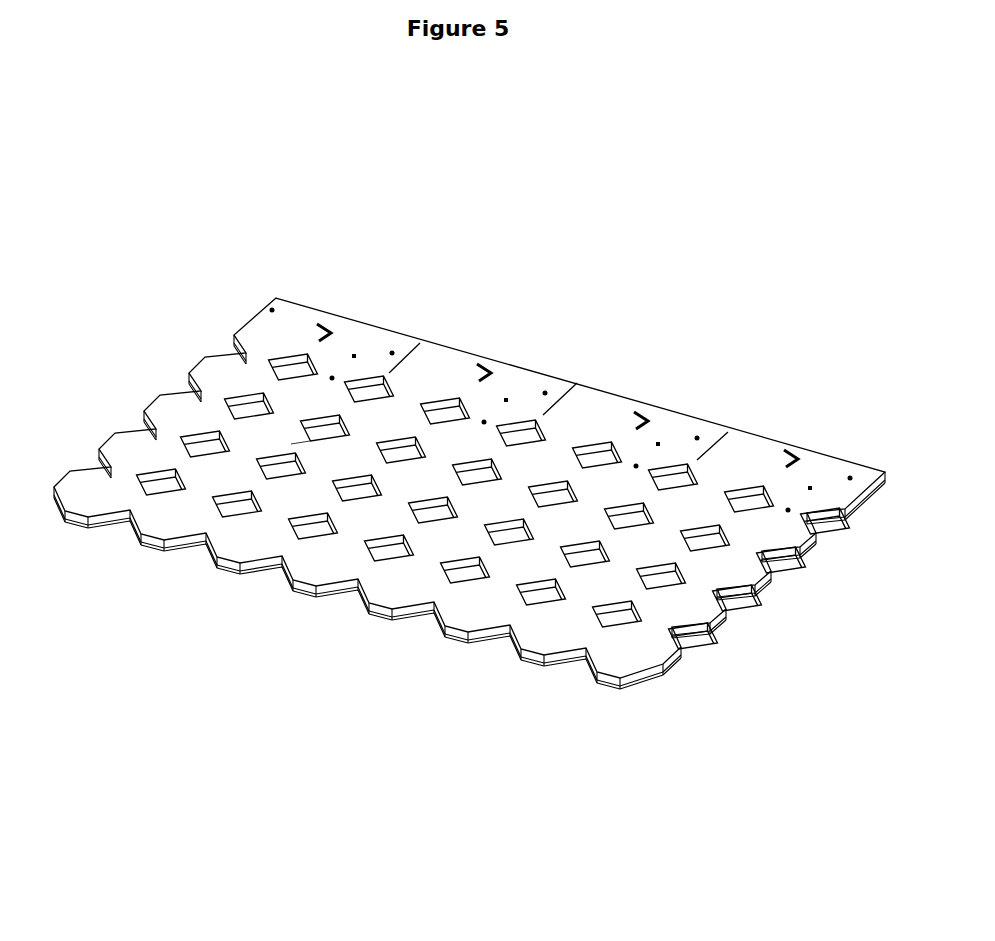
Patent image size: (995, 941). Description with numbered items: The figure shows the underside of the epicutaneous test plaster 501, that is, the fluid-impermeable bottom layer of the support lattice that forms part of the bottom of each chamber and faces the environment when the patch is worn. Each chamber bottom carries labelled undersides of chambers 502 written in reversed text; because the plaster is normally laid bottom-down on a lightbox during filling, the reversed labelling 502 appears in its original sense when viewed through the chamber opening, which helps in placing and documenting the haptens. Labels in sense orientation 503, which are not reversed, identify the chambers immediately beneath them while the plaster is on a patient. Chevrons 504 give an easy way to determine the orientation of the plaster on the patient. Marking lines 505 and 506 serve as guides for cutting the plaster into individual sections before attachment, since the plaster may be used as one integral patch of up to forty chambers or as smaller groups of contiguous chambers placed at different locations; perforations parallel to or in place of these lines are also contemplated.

The epicutaneous test plaster 501 is at (370, 643).
The labelled undersides of chambers 502 is at (588, 597).
The labels in sense orientation 503 is at (673, 418).
The chevrons 504 is at (485, 369).
The cutting guide marking 505 is at (416, 347).
The cutting guide marking 506 is at (303, 445).